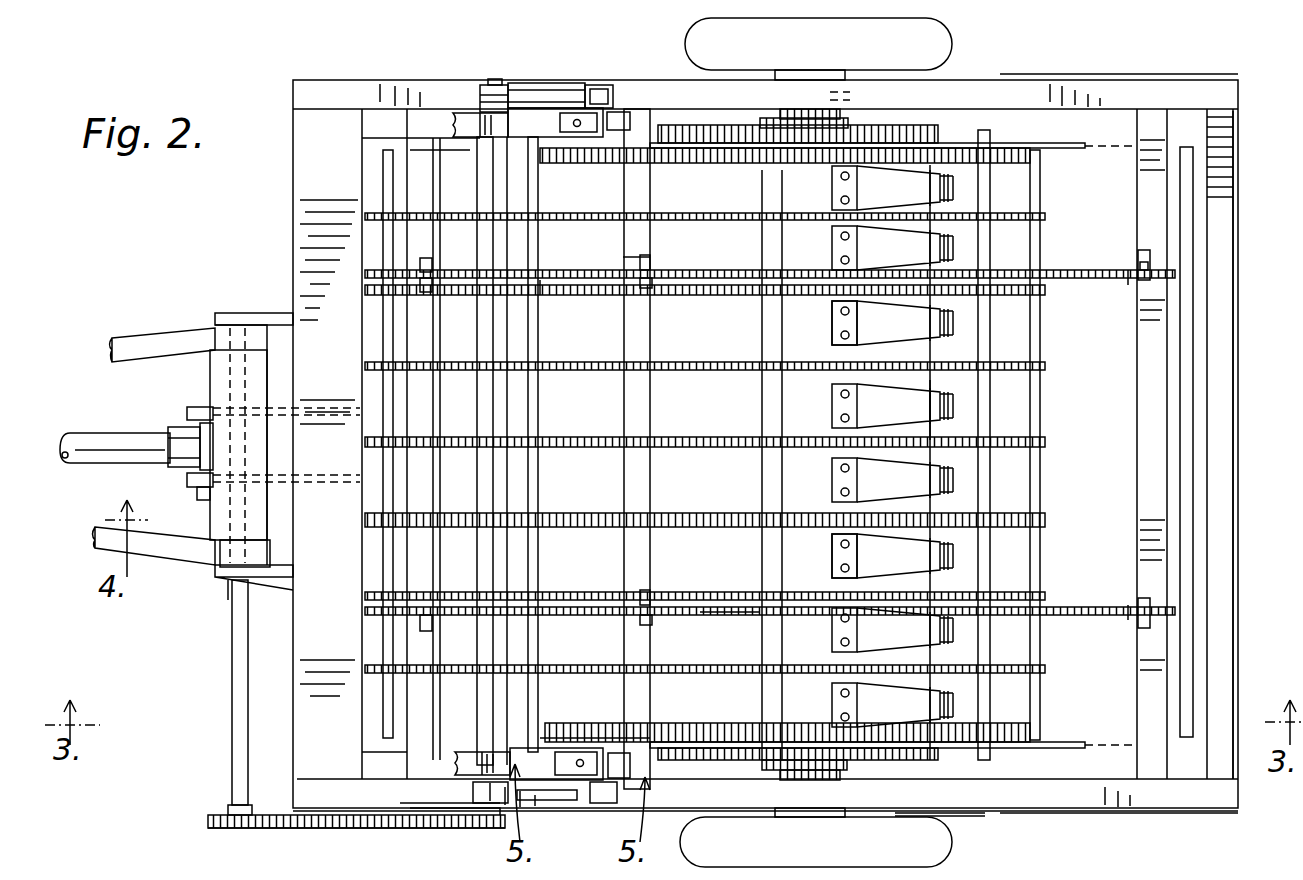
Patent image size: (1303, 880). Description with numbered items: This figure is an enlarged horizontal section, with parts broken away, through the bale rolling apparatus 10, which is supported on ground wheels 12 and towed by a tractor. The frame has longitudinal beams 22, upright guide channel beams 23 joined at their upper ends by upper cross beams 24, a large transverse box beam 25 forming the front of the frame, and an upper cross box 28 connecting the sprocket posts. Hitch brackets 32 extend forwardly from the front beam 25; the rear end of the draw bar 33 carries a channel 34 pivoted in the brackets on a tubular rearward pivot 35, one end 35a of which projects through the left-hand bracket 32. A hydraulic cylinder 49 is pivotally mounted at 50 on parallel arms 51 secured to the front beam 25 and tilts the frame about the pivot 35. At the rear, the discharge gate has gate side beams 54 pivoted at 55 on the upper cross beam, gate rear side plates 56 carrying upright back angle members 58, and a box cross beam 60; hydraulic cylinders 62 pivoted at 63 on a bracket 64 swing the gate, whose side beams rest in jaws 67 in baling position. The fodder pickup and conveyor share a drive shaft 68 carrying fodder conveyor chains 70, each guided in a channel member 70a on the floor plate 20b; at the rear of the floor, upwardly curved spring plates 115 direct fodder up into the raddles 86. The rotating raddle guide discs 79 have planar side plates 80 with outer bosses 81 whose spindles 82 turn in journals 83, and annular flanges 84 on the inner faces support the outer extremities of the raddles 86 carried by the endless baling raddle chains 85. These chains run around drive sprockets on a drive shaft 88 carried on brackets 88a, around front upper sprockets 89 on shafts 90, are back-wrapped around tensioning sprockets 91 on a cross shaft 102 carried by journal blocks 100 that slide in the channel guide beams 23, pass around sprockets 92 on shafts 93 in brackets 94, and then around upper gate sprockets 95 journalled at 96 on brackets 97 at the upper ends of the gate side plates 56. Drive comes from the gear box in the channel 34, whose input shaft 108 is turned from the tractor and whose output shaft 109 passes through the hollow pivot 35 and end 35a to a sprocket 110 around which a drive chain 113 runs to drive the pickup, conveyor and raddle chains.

The apparatus 10 is at (1178, 57).
The wheels 12 is at (942, 44).
The floor plate 20b is at (925, 424).
The longitudinal beams 22 is at (320, 818).
The guide channel beams 23 is at (592, 115).
The upper cross beams 24 is at (650, 552).
The transverse box beam 25 is at (302, 193).
The upper cross box 28 is at (432, 392).
The hitch brackets 32 is at (265, 315).
The draw bar 33 is at (165, 557).
The channel 34 is at (210, 380).
The rearward pivot 35 is at (285, 550).
The end of pivot 35a is at (222, 600).
The hydraulic cylinder 49 is at (78, 442).
The pivot mounting 50 is at (200, 500).
The parallel arms 51 is at (278, 412).
The gate side beams 54 is at (655, 792).
The gate pivot 55 is at (625, 737).
The gate rear side plates 56 is at (1115, 80).
The upright back angle members 58 is at (1222, 332).
The box cross beam 60 is at (1142, 463).
The hydraulic cylinders 62 is at (530, 94).
The cylinder pivot 63 is at (493, 82).
The bracket 64 is at (480, 94).
The jaws 67 is at (962, 812).
The drive shaft 68 is at (420, 816).
The fodder conveyor chains 70 is at (742, 272).
The channel member 70a is at (735, 614).
The raddle guide discs 79 is at (1073, 147).
The side plates 80 is at (962, 150).
The outer bosses 81 is at (685, 152).
The spindles 82 is at (790, 72).
The journals 83 is at (815, 77).
The annular raddle supporting flanges 84 is at (760, 164).
The baling raddle chains 85 is at (1062, 277).
The raddles 86 is at (388, 710).
The drive shaft 88 is at (525, 507).
The brackets 88a is at (488, 792).
The front upper sprockets 89 is at (448, 272).
The shafts 90 is at (430, 290).
The tensioning sprockets 91 is at (545, 292).
The sprockets 92 is at (645, 284).
The shafts 93 is at (650, 277).
The brackets 94 is at (625, 257).
The upper gate sprockets 95 is at (1130, 282).
The journal 96 is at (1140, 264).
The brackets 97 is at (1152, 262).
The journal blocks 100 is at (568, 118).
The cross shaft 102 is at (530, 412).
The input shaft 108 is at (182, 448).
The output shaft 109 is at (232, 692).
The sprocket 110 is at (218, 832).
The drive chain 113 is at (412, 824).
The spring plates 115 is at (832, 337).